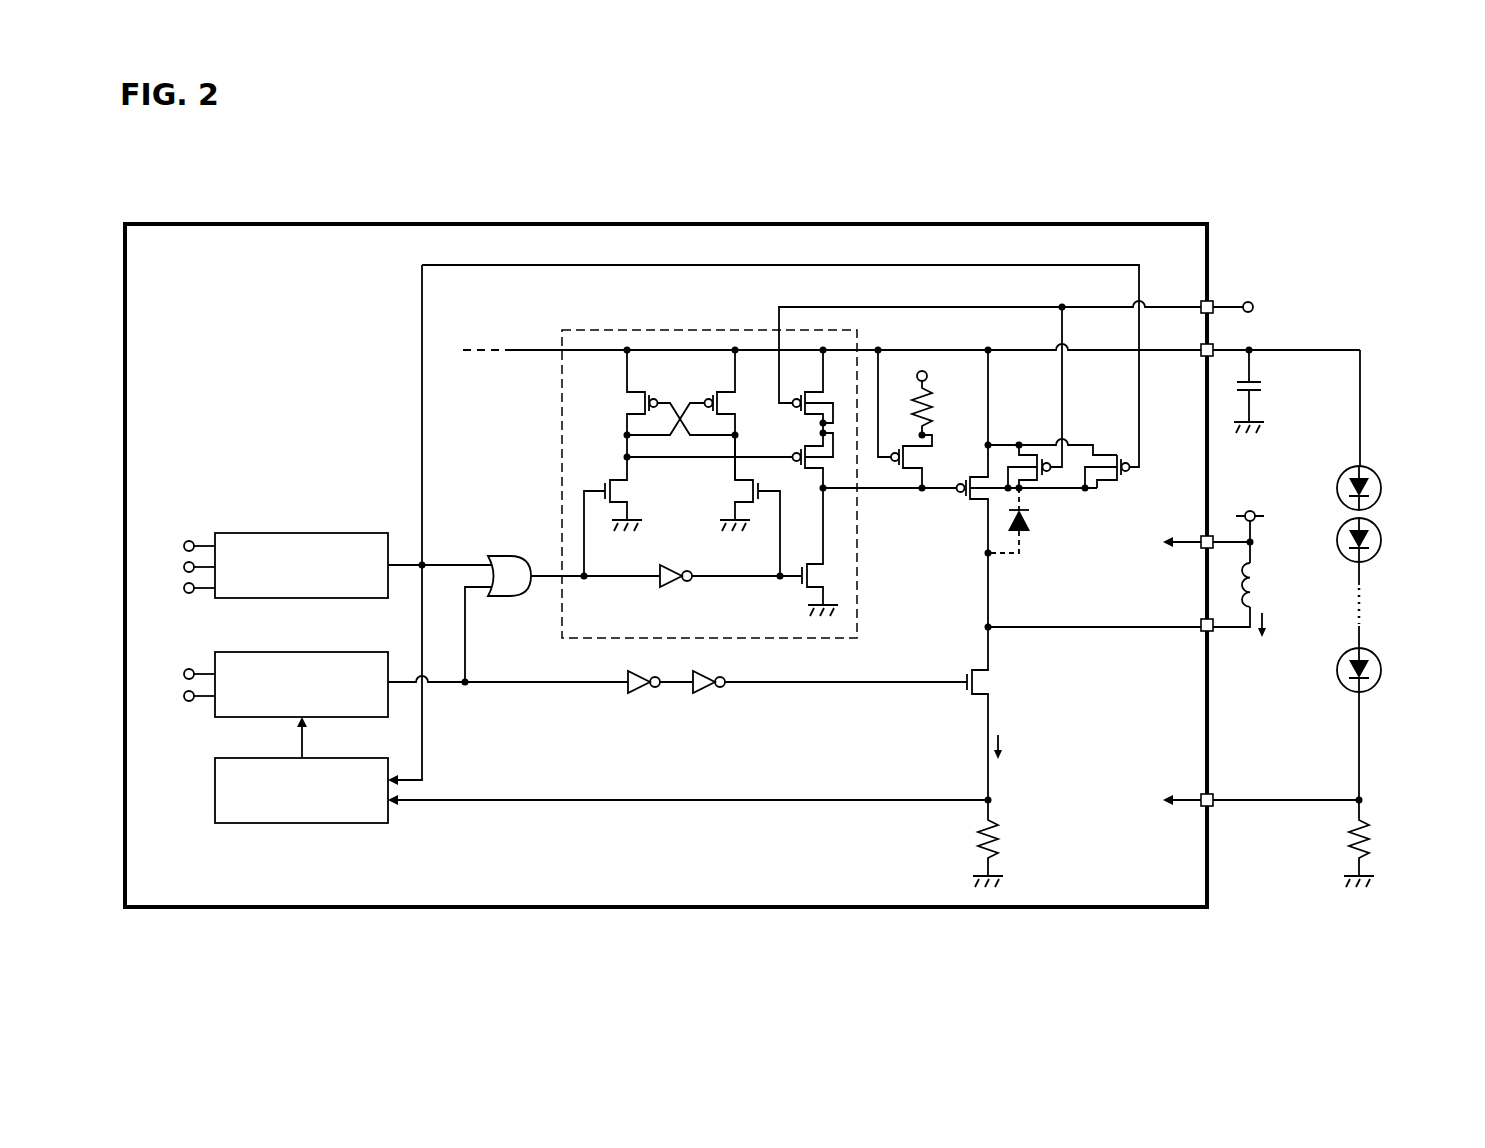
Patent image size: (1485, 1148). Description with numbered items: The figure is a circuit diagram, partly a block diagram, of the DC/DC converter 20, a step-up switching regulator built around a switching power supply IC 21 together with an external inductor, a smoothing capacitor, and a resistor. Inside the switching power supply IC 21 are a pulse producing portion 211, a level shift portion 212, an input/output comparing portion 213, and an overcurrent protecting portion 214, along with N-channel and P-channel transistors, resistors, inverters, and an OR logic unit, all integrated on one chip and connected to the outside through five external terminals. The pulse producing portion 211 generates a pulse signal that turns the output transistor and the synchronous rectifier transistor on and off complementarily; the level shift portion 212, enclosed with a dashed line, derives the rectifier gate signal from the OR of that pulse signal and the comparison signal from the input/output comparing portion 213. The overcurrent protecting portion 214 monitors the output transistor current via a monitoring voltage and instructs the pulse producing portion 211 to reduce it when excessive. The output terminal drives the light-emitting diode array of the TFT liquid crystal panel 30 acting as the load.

The DC/DC converter 20 is at (1297, 233).
The switching power supply IC 21 is at (690, 223).
The TFT liquid crystal panel 30 is at (1449, 514).
The pulse producing portion 211 is at (302, 653).
The level shift portion 212 is at (679, 331).
The input/output comparing portion 213 is at (302, 534).
The overcurrent protecting portion 214 is at (346, 760).